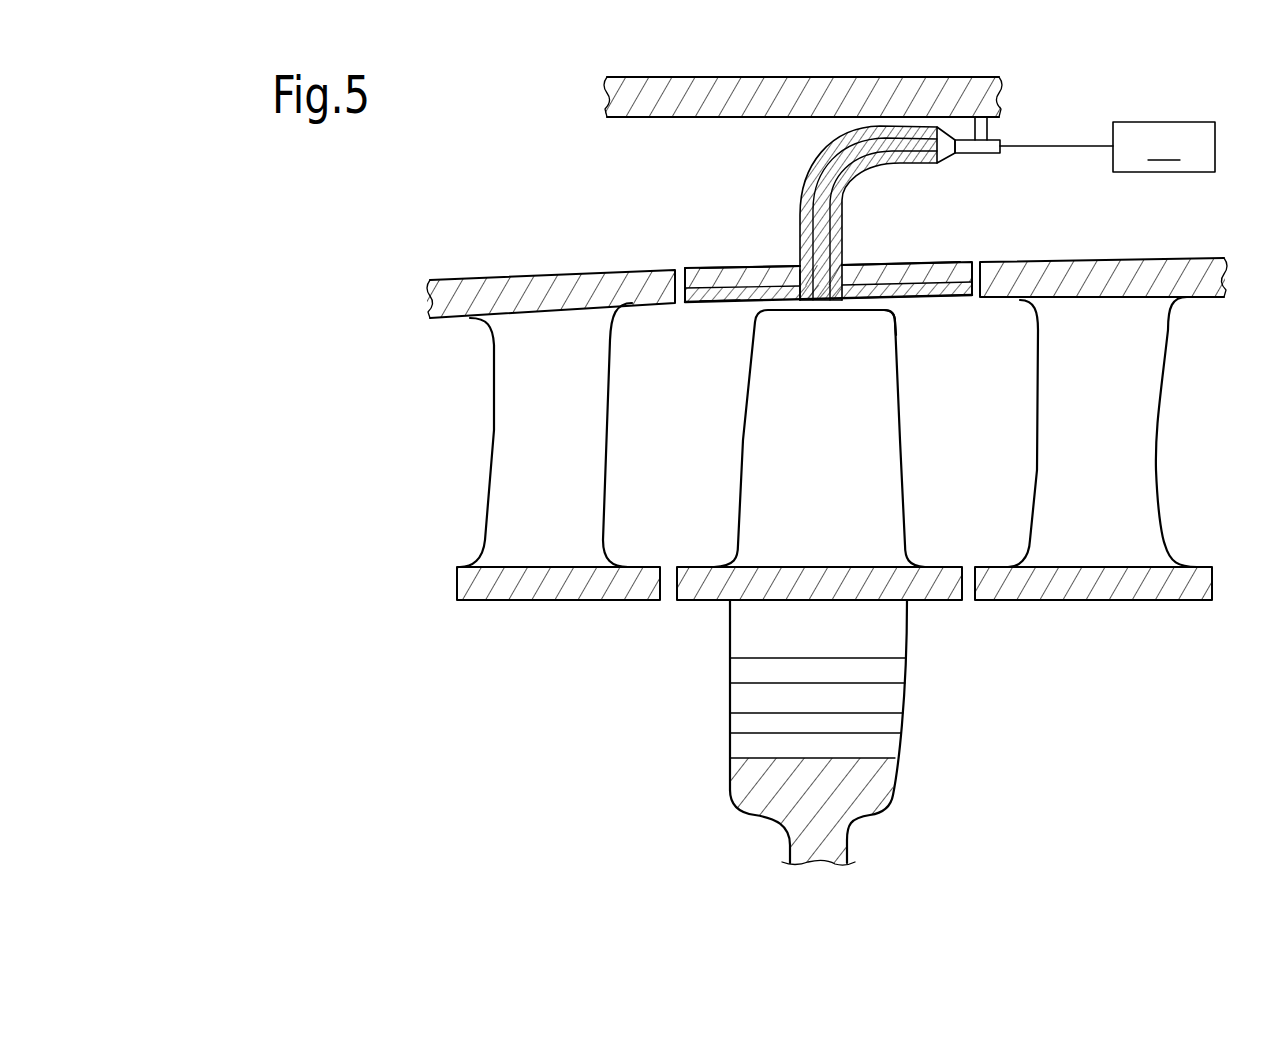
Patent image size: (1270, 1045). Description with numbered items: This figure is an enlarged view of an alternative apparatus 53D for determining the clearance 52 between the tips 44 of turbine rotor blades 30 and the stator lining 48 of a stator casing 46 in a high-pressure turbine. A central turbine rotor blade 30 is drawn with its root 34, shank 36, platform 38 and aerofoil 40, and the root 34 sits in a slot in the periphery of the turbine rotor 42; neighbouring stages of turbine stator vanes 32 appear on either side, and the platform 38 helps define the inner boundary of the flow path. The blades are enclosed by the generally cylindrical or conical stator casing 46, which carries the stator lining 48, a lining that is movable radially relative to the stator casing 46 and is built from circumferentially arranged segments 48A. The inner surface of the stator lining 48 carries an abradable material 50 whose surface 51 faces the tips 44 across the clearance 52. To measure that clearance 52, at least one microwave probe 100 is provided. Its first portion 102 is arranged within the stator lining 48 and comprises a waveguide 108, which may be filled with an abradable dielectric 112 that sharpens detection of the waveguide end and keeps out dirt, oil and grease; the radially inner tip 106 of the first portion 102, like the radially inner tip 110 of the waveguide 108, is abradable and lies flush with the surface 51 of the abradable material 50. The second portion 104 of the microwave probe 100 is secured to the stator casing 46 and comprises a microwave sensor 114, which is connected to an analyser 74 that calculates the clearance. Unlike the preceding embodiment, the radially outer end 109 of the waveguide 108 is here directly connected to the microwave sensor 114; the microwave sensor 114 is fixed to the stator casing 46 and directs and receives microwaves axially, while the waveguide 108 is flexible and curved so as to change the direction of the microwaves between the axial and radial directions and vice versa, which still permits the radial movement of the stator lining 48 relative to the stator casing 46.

The turbine rotor blade 30 is at (890, 512).
The turbine stator vane 32 is at (509, 494).
The root 34 is at (887, 702).
The shank 36 is at (892, 643).
The platform 38 is at (740, 596).
The aerofoil 40 is at (860, 440).
The turbine rotor 42 is at (866, 805).
The tip 44 is at (876, 312).
The stator casing 46 is at (727, 82).
The stator lining 48 is at (803, 316).
The segment 48A is at (864, 263).
The abradable material 50 is at (686, 304).
The surface 51 is at (719, 306).
The clearance 52 is at (877, 302).
The apparatus for determining the clearance 53D is at (962, 47).
The analyser 74 is at (1164, 147).
The microwave probe 100 is at (766, 206).
The first portion 102 is at (787, 265).
The second portion 104 is at (1026, 127).
The radially inner tip 106 is at (824, 293).
The waveguide 108 is at (799, 258).
The radially outer end 109 is at (942, 162).
The radially inner tip of the waveguide 110 is at (799, 302).
The dielectric 112 is at (835, 180).
The microwave sensor 114 is at (963, 142).